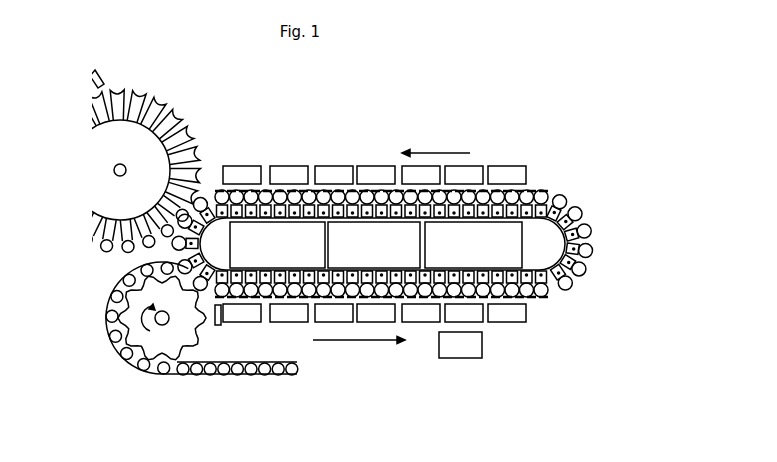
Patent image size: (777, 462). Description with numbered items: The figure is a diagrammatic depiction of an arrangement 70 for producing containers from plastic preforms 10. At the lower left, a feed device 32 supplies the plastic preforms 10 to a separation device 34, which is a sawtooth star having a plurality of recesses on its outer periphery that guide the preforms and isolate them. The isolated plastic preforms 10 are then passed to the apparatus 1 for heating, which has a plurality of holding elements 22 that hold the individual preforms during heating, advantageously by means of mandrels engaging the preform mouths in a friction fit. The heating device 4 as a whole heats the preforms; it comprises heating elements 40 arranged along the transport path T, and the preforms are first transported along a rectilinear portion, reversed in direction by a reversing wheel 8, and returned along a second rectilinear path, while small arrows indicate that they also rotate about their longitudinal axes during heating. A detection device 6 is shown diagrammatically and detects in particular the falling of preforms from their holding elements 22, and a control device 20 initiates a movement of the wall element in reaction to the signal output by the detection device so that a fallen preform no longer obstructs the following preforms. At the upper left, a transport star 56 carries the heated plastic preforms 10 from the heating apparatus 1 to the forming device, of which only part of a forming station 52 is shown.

The apparatus for heating plastic preforms 1 is at (384, 137).
The heating device 4 is at (285, 240).
The detection device 6 is at (220, 322).
The reversing wheel 8 is at (553, 238).
The plastic preforms 10 is at (112, 338).
The control device 20 is at (460, 345).
The holding elements 22 is at (252, 208).
The feed device 32 is at (205, 385).
The separation device 34 is at (130, 310).
The heating elements 40 is at (399, 244).
The forming station 52 is at (98, 78).
The transport star 56 is at (182, 95).
The arrangement for producing containers 70 is at (176, 344).